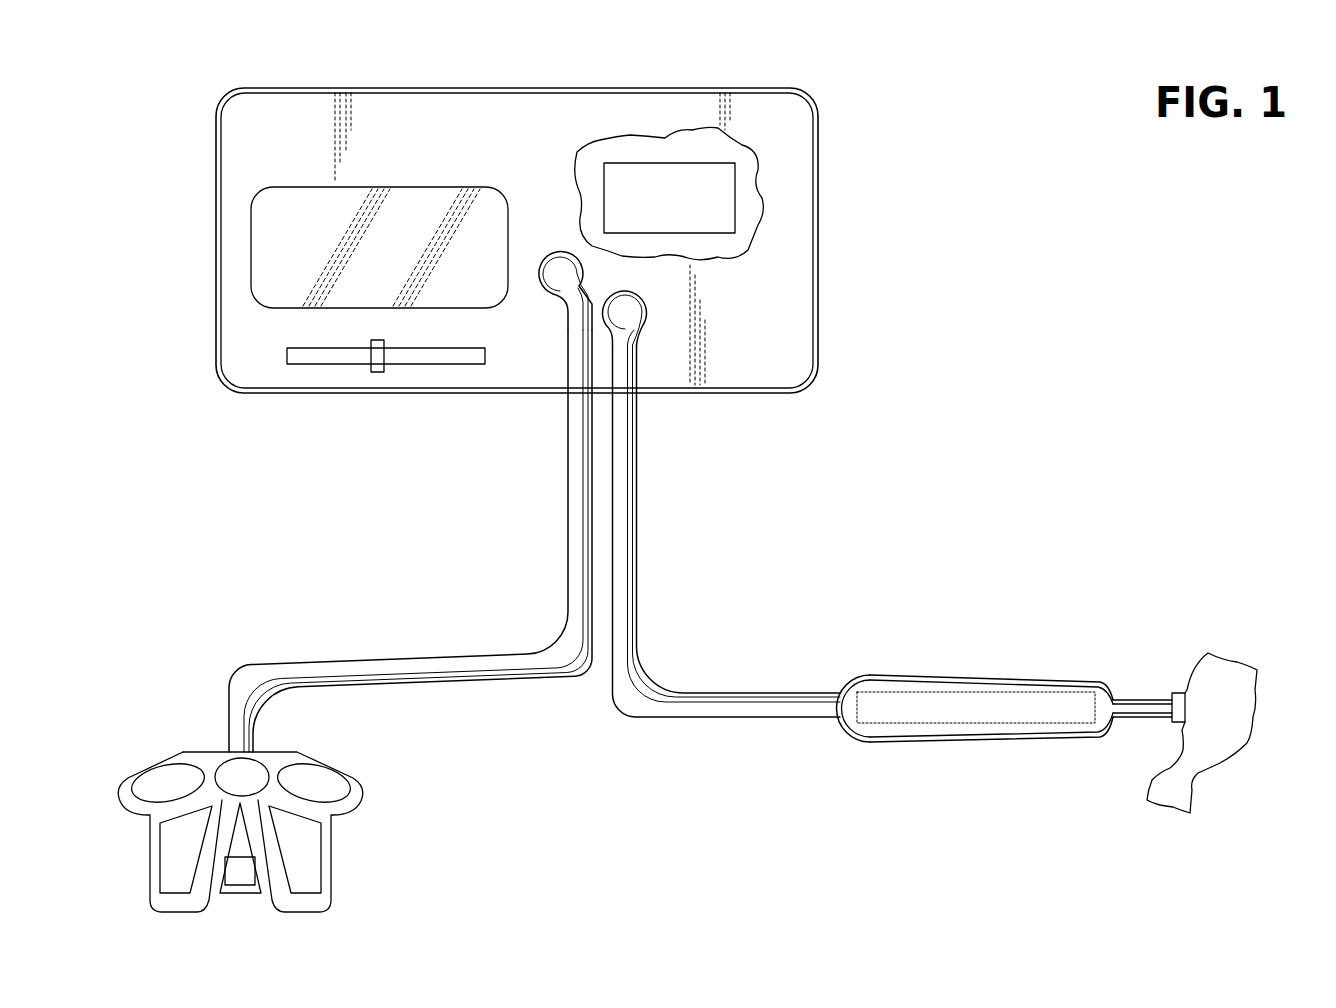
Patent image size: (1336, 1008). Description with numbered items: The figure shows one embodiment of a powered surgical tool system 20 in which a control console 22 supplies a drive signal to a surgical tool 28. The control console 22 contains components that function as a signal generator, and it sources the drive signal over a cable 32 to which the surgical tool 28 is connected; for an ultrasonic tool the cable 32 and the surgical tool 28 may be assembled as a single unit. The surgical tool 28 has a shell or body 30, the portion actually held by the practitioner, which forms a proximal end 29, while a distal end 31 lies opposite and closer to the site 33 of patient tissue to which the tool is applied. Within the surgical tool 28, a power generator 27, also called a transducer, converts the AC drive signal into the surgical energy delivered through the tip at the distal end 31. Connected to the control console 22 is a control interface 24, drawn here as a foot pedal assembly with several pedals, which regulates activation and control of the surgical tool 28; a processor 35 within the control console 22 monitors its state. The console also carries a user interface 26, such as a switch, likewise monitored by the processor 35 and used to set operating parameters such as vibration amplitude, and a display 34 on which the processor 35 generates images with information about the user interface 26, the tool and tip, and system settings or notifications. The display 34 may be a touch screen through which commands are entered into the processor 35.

The powered surgical tool system 20 is at (1052, 372).
The control console 22 is at (507, 78).
The control interface 24 is at (177, 746).
The user interface 26 is at (328, 366).
The power generator 27 is at (893, 720).
The surgical tool 28 is at (1160, 668).
The proximal end 29 is at (837, 724).
The body 30 is at (1004, 740).
The distal end 31 is at (1176, 693).
The cable 32 is at (637, 551).
The site 33 is at (1223, 677).
The display 34 is at (273, 231).
The processor 35 is at (680, 223).